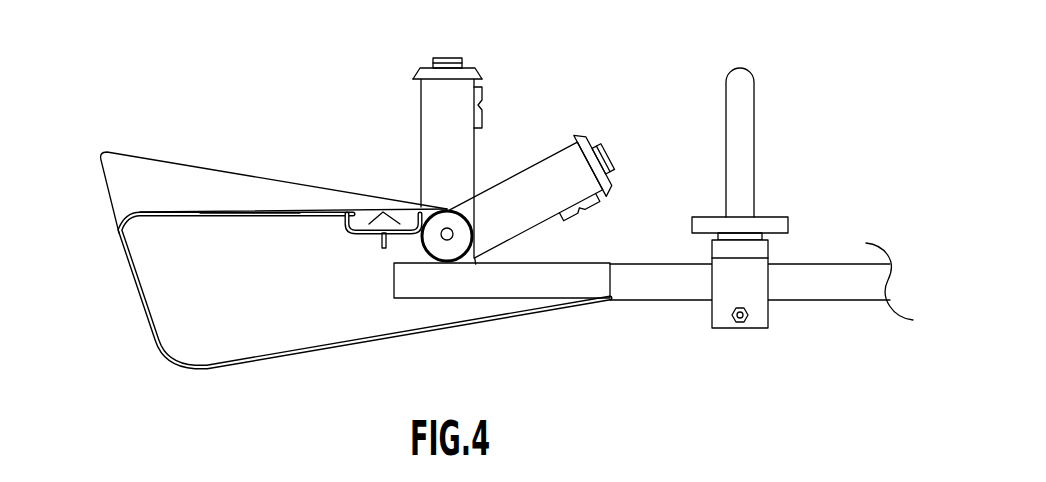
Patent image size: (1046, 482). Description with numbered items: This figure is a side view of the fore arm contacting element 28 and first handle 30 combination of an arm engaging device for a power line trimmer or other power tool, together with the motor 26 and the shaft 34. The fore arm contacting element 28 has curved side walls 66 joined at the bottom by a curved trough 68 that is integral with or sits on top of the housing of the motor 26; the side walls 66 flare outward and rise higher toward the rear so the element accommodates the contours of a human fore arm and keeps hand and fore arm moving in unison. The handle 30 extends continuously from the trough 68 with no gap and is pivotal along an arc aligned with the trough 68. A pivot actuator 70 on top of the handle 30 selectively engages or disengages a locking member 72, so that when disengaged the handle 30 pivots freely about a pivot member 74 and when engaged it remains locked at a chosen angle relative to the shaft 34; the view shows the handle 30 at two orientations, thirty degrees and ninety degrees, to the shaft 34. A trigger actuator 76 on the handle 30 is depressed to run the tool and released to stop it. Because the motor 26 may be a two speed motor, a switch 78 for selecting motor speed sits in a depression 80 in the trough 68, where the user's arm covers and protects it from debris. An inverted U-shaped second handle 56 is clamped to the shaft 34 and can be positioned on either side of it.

The motor 26 is at (153, 295).
The fore arm contacting element 28 is at (92, 256).
The first handle 30 is at (477, 160).
The shaft 34 is at (823, 266).
The inverted U-shaped handle 56 is at (755, 87).
The side walls 66 is at (110, 177).
The trough 68 is at (243, 213).
The pivot actuator 70 is at (457, 57).
The locking member 72 is at (459, 252).
The pivot member 74 is at (441, 250).
The trigger actuator 76 is at (483, 96).
The switch 78 is at (388, 212).
The depression 80 is at (360, 214).